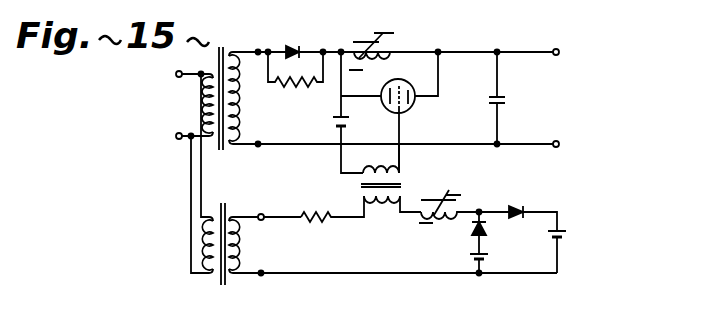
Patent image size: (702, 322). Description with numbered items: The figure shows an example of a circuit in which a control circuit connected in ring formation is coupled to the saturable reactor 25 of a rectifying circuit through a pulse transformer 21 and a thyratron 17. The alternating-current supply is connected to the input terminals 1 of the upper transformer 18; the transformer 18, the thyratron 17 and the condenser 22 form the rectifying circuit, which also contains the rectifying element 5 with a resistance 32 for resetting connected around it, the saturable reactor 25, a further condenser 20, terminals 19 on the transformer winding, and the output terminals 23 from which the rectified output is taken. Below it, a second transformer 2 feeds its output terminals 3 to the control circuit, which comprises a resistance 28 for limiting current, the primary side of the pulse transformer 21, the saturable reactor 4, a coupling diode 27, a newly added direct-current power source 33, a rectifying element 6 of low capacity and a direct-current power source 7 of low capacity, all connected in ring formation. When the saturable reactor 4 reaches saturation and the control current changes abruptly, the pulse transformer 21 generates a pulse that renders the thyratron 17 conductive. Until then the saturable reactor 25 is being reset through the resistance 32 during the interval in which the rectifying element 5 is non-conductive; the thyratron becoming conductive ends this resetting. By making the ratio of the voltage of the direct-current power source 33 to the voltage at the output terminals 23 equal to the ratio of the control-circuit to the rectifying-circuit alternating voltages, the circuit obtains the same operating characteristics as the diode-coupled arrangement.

The input terminals 1 is at (175, 74).
The transformer 18 is at (220, 47).
The secondary terminals 19 is at (258, 50).
The rectifying element 5 is at (293, 48).
The resistance for resetting 32 is at (296, 87).
The saturable reactor 25 is at (392, 44).
The capacitor 20 is at (350, 123).
The thyratron 17 is at (414, 106).
The condenser 22 is at (508, 102).
The output terminals of the rectifying circuit 23 is at (562, 52).
The transformer 2 is at (224, 204).
The output terminals 3 is at (263, 214).
The resistance for limiting current 28 is at (323, 221).
The pulse transformer 21 is at (404, 184).
The saturable reactor 4 is at (448, 191).
The coupling diode 27 is at (470, 229).
The direct-current power source 33 is at (488, 257).
The rectifying element of low capacity 6 is at (515, 204).
The direct-current power source of low capacity 7 is at (566, 235).